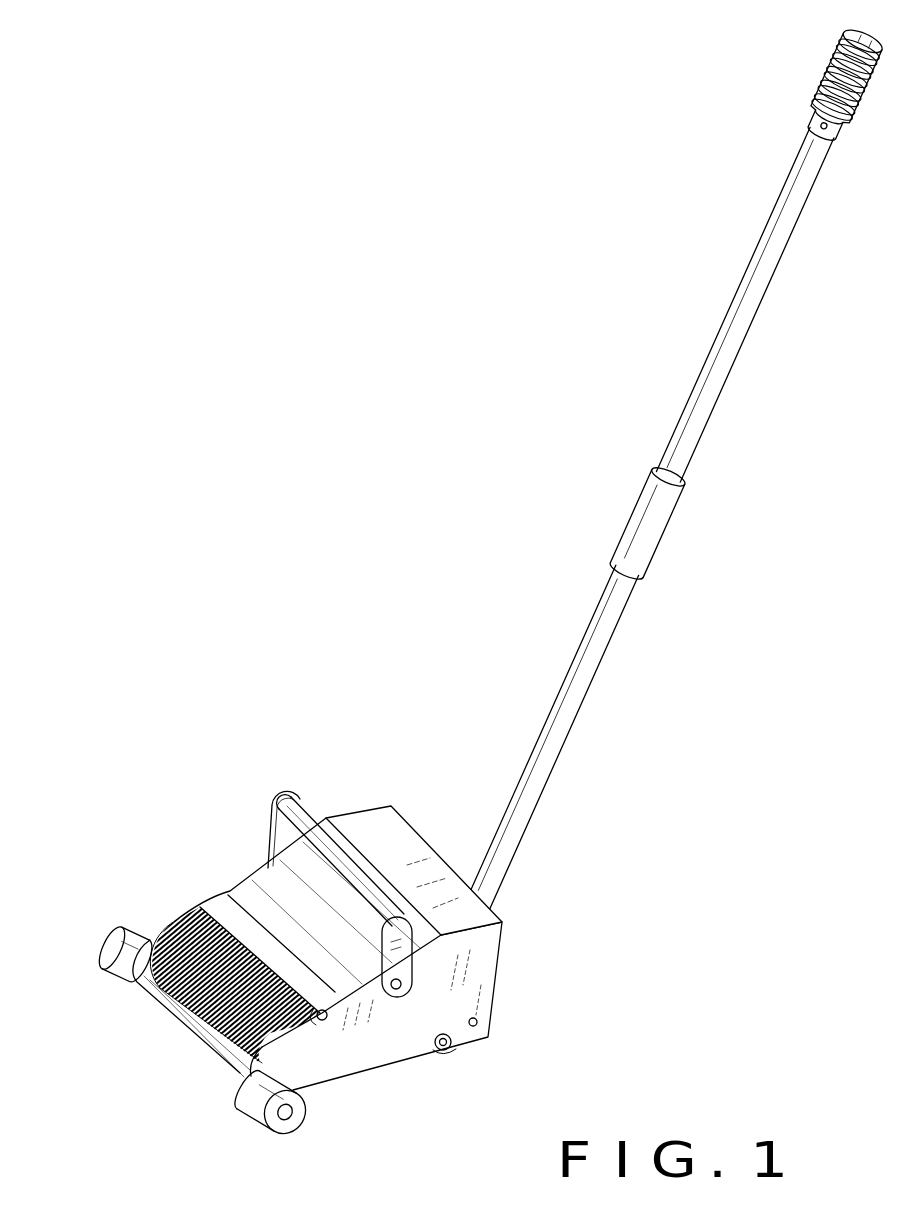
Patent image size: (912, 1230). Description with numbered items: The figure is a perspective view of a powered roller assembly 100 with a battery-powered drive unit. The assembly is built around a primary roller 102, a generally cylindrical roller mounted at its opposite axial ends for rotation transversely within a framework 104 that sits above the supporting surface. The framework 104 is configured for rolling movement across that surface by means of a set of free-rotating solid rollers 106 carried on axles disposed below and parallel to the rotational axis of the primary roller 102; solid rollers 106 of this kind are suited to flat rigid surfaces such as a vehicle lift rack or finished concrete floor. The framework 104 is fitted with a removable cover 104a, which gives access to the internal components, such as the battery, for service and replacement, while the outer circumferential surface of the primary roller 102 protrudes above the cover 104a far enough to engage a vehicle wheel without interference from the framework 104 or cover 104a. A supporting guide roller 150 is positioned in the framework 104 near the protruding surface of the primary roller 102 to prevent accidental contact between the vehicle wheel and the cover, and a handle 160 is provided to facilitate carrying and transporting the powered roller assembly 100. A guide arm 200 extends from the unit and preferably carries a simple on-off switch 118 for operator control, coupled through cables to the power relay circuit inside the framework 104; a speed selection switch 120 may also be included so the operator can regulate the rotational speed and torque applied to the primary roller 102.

The powered roller assembly 100 is at (537, 935).
The primary roller 102 is at (185, 915).
The framework 104 is at (330, 1047).
The removable cover 104a is at (380, 840).
The free-rotating solid rollers 106 is at (118, 932).
The on-off switch 118 is at (801, 122).
The speed selection switch 120 is at (823, 63).
The supporting guide roller 150 is at (219, 896).
The handle 160 is at (298, 792).
The guide arm 200 is at (636, 457).